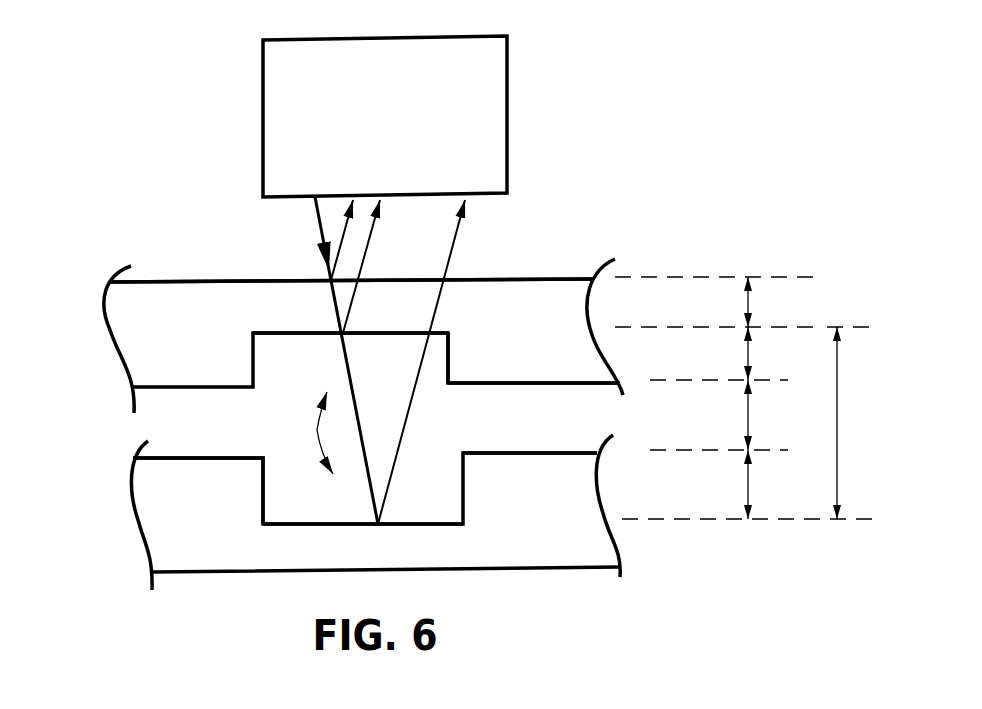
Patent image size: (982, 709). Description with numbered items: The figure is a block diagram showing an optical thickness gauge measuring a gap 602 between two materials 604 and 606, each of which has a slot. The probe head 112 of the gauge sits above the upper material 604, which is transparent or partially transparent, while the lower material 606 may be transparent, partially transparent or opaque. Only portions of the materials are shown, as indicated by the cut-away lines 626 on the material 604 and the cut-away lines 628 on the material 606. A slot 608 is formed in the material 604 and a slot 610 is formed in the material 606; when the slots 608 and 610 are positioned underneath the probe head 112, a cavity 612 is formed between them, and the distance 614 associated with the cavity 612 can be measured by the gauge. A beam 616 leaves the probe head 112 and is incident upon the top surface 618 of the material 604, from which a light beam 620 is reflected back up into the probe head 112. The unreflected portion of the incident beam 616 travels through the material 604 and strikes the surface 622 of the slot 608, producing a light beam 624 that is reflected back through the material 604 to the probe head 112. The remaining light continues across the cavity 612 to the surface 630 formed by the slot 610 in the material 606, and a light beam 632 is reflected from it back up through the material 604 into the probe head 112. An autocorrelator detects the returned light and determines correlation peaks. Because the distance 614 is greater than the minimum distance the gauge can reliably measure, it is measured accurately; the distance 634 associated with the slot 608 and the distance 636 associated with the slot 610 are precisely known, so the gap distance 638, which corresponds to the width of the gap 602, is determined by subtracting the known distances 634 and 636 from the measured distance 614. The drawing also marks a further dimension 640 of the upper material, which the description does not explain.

The probe head 112 is at (455, 178).
The gap 602 is at (570, 424).
The material 604 is at (547, 367).
The material 606 is at (550, 555).
The slot 608 is at (434, 374).
The slot 610 is at (288, 480).
The cavity 612 is at (317, 430).
The distance 614 is at (863, 423).
The beam 616 is at (317, 225).
The top surface 618 is at (192, 287).
The light beam 620 is at (343, 238).
The surface 622 is at (283, 333).
The light beam 624 is at (352, 307).
The cut-away lines 626 is at (103, 317).
The cut-away lines 628 is at (130, 477).
The surface 630 is at (280, 530).
The light beam 632 is at (453, 260).
The distance 634 is at (776, 353).
The distance 636 is at (781, 484).
The gap distance 638 is at (776, 415).
The thickness of upper substrate top portion 640 is at (776, 302).